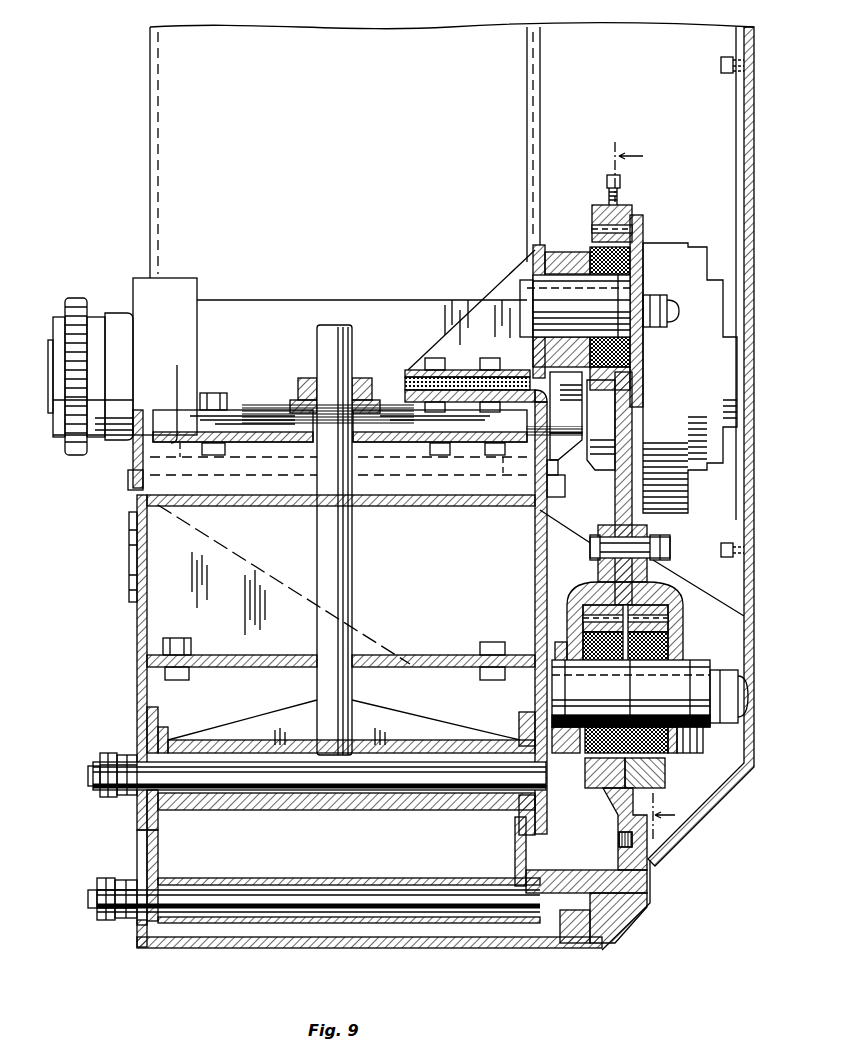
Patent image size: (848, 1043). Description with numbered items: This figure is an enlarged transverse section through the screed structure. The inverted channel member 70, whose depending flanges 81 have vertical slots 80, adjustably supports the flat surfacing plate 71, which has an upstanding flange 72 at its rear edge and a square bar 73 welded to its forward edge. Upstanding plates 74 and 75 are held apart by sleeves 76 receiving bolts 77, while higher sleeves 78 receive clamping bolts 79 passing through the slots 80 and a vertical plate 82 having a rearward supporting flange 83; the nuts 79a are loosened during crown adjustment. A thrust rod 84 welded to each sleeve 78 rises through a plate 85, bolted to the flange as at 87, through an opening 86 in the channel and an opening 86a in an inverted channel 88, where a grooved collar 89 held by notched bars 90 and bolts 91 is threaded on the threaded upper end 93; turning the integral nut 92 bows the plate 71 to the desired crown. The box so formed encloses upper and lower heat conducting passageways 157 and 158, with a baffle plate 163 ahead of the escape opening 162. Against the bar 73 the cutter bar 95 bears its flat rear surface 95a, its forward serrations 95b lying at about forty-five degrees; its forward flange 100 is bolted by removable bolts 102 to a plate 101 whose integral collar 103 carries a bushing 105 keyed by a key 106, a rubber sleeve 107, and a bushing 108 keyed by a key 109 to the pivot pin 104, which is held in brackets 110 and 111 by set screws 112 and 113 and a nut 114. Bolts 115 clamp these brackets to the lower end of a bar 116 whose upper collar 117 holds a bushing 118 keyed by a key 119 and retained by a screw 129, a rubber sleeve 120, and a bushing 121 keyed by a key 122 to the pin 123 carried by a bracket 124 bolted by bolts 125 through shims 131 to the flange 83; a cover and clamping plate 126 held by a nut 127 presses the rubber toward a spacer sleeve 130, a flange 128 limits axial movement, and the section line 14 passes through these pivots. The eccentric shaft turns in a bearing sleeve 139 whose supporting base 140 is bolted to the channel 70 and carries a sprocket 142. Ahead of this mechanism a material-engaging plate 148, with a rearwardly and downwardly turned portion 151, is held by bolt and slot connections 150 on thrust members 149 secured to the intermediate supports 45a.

The intermediate supports 45a is at (155, 138).
The sprocket 142 is at (74, 298).
The bearing sleeve 139 is at (265, 314).
The inverted channel 88 is at (140, 478).
The bracket 124 is at (490, 298).
The grooved collar 89 is at (312, 421).
The notched bars 90 is at (245, 414).
The bolts 91 is at (210, 393).
The nut 92 is at (305, 378).
The supporting flange 83 is at (403, 394).
The threaded upper end 93 is at (352, 345).
The bolts 125 is at (434, 358).
The shims 131 is at (462, 377).
The flange 128 is at (505, 390).
The opening 86a is at (300, 442).
The thrust rod 84 is at (353, 575).
The opening 86 is at (353, 504).
The inverted channel member 70 is at (232, 503).
The depending flanges 81 is at (137, 688).
The surfacing plate 71 is at (406, 948).
The upstanding flange 72 is at (137, 930).
The vertical plate 82 is at (546, 526).
The escape opening 162 is at (129, 555).
The baffle plate 163 is at (254, 568).
The upper heat conducting passageway 157 is at (478, 568).
The plate 85 is at (390, 655).
The bolt 87 is at (170, 640).
The lower heat conducting passageway 158 is at (478, 702).
The sleeves 78 is at (174, 743).
The clamping bolts 79 is at (220, 767).
The nuts 79a is at (122, 798).
The vertical slots 80 is at (144, 760).
The upstanding plate 75 is at (158, 840).
The sleeves 76 is at (274, 884).
The bolts 77 is at (222, 896).
The upstanding plate 74 is at (526, 850).
The bar 73 is at (532, 958).
The cutter bar 95 is at (642, 894).
The flat rear surface 95a is at (625, 935).
The teeth or serrations 95b is at (630, 922).
The upstanding forward flange 100 is at (650, 866).
The plate 101 is at (618, 820).
The removable bolts 102 is at (619, 838).
The integral collars 103 is at (585, 778).
The bushing 105 is at (665, 768).
The section line 14 is at (650, 491).
The screw 129 is at (607, 182).
The key 119 is at (592, 232).
The cover and clamping plate 126 is at (645, 230).
The spacer sleeve 130 is at (552, 258).
The key 122 is at (633, 268).
The pin 123 is at (575, 306).
The nut 127 is at (658, 300).
The bushing 121 is at (633, 341).
The rubber sleeve 120 is at (633, 357).
The bushing 118 is at (633, 378).
The bar 116 is at (632, 436).
The collar 117 is at (590, 386).
The supporting base 140 is at (565, 488).
The supporting bracket 110 is at (672, 578).
The supporting bracket 111 is at (568, 602).
The bolts 115 is at (670, 550).
The key 106 is at (668, 607).
The rubber sleeve 107 is at (668, 640).
The pivot pin 104 is at (700, 672).
The bushing 108 is at (600, 710).
The key 109 is at (627, 686).
The set screw 112 is at (675, 662).
The nut 114 is at (740, 690).
The set screw 113 is at (703, 742).
The material-engaging plate 148 is at (750, 165).
The thrust members 149 is at (733, 137).
The bolt and slot connections 150 is at (725, 71).
The angularly disposed portion 151 is at (692, 832).